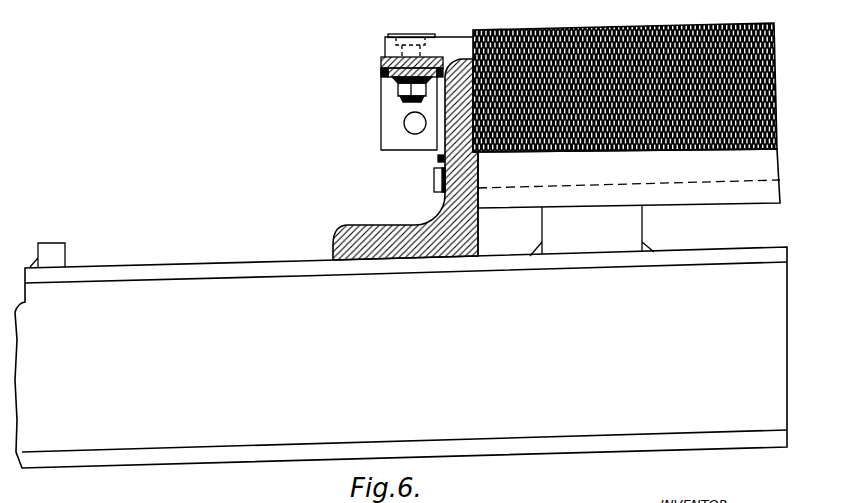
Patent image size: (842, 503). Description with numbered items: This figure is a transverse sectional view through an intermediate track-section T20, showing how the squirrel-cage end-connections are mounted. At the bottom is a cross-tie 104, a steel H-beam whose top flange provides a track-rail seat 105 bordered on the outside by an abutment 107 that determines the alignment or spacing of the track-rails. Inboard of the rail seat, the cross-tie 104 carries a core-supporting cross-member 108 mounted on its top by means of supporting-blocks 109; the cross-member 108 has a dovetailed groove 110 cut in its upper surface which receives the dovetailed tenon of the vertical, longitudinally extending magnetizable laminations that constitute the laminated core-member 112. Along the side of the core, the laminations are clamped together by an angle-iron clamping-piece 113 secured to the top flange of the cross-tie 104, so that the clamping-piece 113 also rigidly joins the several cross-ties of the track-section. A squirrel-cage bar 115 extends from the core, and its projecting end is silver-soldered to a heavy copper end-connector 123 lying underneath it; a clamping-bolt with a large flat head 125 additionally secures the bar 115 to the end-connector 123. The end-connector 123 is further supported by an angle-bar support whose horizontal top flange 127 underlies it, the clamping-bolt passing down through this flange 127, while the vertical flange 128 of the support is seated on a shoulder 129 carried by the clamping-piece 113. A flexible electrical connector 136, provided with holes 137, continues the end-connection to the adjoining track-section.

The cross-tie 104 is at (179, 290).
The track-rail seat 105 is at (122, 266).
The abutment 107 is at (61, 254).
The core-supporting cross-member 108 is at (733, 199).
The supporting-block 109 is at (636, 233).
The dovetailed groove 110 is at (529, 188).
The laminated core-member 112 is at (704, 26).
The angle-iron clamping-piece 113 is at (457, 206).
The squirrel-cage bar 115 is at (452, 44).
The end-connector 123 is at (381, 62).
The flat head 125 is at (398, 34).
The horizontal top flange 127 is at (392, 81).
The vertical flange 128 is at (440, 159).
The shoulder 129 is at (435, 177).
The flexible electrical connector 136 is at (383, 138).
The hole 137 is at (406, 123).
The track-section T20 is at (324, 263).